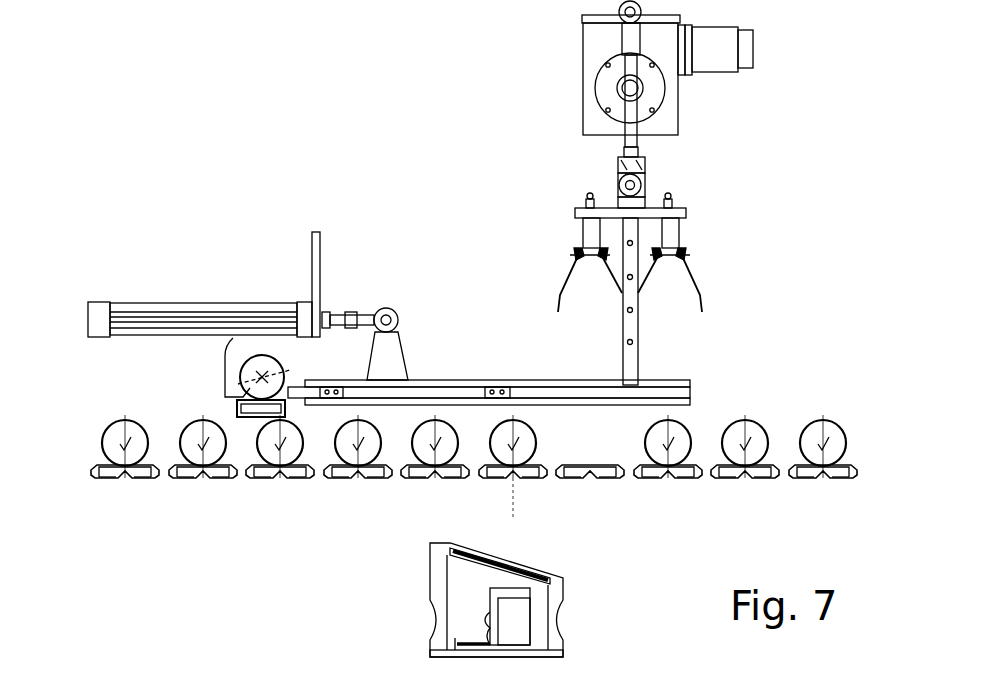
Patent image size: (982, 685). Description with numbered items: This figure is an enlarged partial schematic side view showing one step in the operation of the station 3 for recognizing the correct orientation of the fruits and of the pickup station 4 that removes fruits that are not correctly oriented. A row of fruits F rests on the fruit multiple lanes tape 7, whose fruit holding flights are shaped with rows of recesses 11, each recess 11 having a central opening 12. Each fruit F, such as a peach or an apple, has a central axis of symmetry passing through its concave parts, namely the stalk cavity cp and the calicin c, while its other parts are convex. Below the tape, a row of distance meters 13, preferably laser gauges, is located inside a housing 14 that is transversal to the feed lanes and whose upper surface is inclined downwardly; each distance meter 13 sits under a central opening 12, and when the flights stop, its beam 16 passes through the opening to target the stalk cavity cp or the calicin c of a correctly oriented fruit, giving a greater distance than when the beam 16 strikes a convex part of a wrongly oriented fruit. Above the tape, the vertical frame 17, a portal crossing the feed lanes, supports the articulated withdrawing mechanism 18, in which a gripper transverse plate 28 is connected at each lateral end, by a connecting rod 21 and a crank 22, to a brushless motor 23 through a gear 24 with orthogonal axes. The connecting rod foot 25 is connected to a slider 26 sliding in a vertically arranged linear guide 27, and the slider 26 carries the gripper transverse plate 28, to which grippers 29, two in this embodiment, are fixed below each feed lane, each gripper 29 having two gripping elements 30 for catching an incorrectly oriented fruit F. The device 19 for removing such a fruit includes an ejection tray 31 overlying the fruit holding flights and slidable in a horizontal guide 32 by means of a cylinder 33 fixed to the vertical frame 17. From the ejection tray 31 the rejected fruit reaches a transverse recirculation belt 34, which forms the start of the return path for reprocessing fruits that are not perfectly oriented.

The station for recognizing the correct orientation of the fruits 3 is at (580, 617).
The pickup station 4 is at (735, 128).
The fruit multiple lanes tape 7 is at (92, 432).
The recess 11 is at (90, 476).
The central opening 12 is at (122, 474).
The distance meter 13 is at (527, 597).
The housing 14 is at (430, 566).
The beam 16 is at (513, 480).
The vertical frame 17 is at (582, 18).
The articulated withdrawing mechanism 18 is at (672, 185).
The device for removing the not correctly oriented fruit 19 is at (293, 222).
The connecting rod 21 is at (640, 128).
The crank 22 is at (645, 36).
The brushless motor 23 is at (708, 73).
The gear with orthogonal axes 24 is at (583, 80).
The connecting rod foot 25 is at (618, 192).
The slider 26 is at (618, 165).
The linear guide 27 is at (638, 343).
The gripper transverse plate 28 is at (686, 212).
The gripper 29 is at (583, 228).
The gripping element 30 is at (572, 262).
The ejection tray 31 is at (437, 380).
The horizontal guide 32 is at (690, 384).
The cylinder 33 is at (243, 302).
The transverse recirculation belt 34 is at (243, 387).
The fruit F is at (306, 432).
The calicin c is at (822, 478).
The stalk cavity cp is at (827, 422).